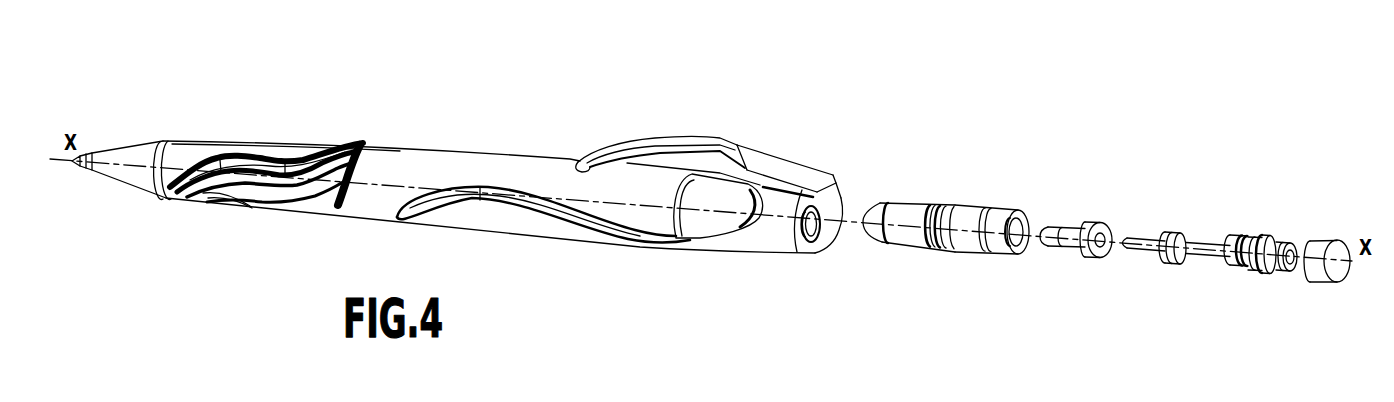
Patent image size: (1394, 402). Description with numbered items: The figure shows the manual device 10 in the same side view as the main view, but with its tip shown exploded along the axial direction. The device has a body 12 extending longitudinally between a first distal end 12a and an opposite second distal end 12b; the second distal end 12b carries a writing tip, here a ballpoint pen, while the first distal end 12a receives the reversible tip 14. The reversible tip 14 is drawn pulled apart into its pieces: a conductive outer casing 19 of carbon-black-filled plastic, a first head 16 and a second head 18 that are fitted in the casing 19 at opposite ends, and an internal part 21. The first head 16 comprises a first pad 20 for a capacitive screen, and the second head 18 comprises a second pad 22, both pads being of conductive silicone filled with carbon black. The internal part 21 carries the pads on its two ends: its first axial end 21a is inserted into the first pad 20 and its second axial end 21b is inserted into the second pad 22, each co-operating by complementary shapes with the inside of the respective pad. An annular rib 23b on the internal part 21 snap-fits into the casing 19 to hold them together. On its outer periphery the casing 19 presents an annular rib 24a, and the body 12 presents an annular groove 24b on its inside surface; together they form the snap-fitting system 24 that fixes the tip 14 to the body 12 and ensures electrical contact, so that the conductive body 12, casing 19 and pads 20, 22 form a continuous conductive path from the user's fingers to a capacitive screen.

The manual device 10 is at (217, 276).
The body 12 is at (487, 230).
The first distal end 12a is at (762, 246).
The second distal end 12b is at (128, 178).
The reversible tip 14 is at (1368, 193).
The first head 16 is at (1342, 290).
The second head 18 is at (1064, 258).
The conductive outer casing 19 is at (969, 238).
The first pad 20 is at (1341, 239).
The internal part 21 is at (1212, 242).
The first axial end 21a is at (1288, 236).
The second axial end 21b is at (1143, 235).
The second pad 22 is at (1063, 233).
The annular rib 23b is at (1238, 266).
The snap-fitting system 24 is at (902, 309).
The annular rib 24a is at (941, 256).
The annular groove 24b is at (823, 241).